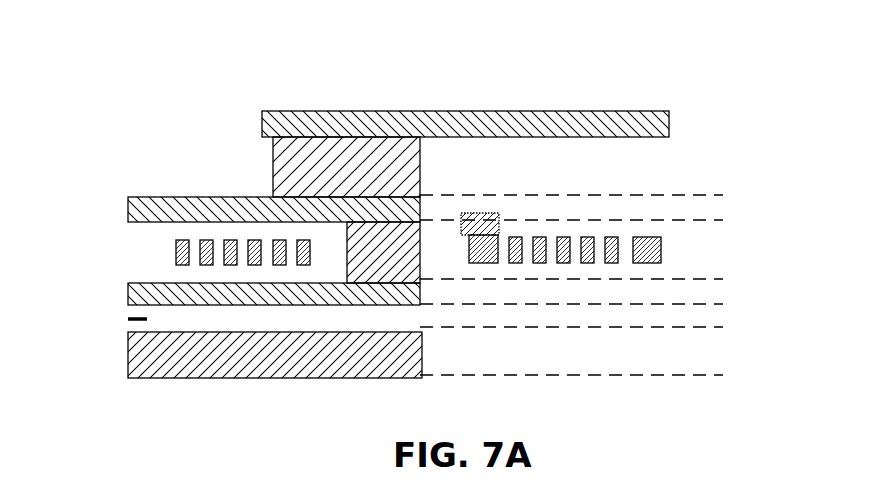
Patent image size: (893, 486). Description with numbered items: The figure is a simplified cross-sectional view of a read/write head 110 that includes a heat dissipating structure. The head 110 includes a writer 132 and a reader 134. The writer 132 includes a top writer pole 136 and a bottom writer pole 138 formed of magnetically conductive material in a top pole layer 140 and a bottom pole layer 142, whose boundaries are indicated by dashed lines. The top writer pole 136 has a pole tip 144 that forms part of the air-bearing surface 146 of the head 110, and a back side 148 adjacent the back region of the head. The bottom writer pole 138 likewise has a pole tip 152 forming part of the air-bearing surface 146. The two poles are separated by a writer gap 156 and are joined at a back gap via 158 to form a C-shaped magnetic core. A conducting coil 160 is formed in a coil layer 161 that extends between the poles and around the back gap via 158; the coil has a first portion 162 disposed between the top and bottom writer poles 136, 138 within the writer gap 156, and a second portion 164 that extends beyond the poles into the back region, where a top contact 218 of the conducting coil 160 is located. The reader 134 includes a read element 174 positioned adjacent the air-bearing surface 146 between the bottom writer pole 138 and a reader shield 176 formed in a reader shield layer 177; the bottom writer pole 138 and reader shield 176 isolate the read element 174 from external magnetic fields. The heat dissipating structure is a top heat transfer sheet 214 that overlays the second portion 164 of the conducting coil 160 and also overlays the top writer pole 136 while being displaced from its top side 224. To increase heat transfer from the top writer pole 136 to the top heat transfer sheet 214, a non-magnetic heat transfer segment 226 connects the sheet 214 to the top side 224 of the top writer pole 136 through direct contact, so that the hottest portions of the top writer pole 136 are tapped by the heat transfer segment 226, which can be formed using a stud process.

The read/write head 110 is at (630, 70).
The top heat transfer sheet 214 is at (482, 111).
The heat transfer segment 226 is at (273, 158).
The top writer pole 136 is at (160, 197).
The top side 224 is at (188, 197).
The pole tip 144 is at (127, 221).
The writer 132 is at (105, 213).
The writer gap 156 is at (138, 242).
The back side 148 is at (422, 208).
The back gap via 158 is at (402, 258).
The pole tip 152 is at (128, 290).
The bottom writer pole 138 is at (137, 284).
The read element 174 is at (128, 319).
The reader shield 176 is at (212, 368).
The reader 134 is at (113, 346).
The air-bearing surface 146 is at (118, 365).
The first portion 162 is at (284, 275).
The top pole layer 140 is at (714, 202).
The bottom pole layer 142 is at (713, 286).
The reader shield layer 177 is at (717, 348).
The top contact 218 is at (498, 213).
The conducting coil 160 is at (645, 223).
The coil layer 161 is at (717, 250).
The second portion 164 is at (585, 272).